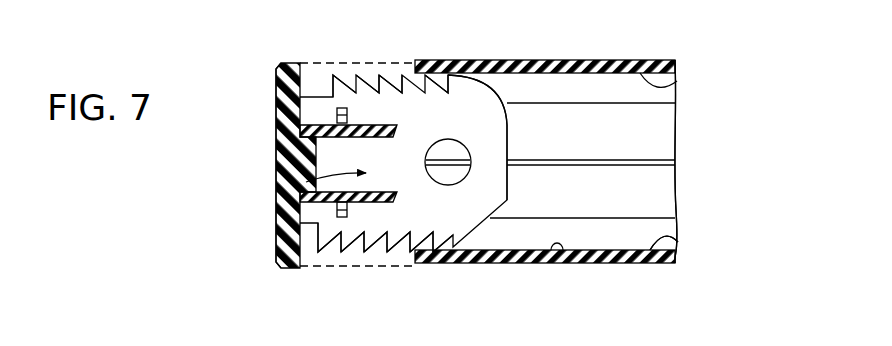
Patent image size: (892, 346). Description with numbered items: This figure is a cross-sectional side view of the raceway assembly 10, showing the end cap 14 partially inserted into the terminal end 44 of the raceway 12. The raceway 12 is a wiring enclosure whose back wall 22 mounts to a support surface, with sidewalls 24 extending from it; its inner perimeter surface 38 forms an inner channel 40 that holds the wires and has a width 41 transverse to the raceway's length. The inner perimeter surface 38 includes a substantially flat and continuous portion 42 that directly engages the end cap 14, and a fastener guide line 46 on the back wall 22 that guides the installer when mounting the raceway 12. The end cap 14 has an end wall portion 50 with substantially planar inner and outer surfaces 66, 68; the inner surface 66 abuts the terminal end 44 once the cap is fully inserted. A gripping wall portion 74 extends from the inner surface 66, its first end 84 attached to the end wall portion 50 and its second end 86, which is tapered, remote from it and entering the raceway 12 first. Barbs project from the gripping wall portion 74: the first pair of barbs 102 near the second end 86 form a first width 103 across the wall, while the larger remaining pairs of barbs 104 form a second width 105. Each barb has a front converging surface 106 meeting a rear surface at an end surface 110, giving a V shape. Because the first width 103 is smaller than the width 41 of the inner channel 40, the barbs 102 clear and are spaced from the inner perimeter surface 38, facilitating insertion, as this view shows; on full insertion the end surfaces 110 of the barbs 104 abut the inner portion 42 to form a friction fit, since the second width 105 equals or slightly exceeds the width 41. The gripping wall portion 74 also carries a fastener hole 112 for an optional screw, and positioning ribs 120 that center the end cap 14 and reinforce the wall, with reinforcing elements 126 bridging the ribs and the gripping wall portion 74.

The raceway assembly 10 is at (692, 42).
The raceway 12 is at (652, 282).
The end cap 14 is at (243, 88).
The back wall 22 is at (673, 106).
The sidewalls 24 is at (592, 60).
The inner perimeter surface 38 is at (668, 238).
The inner channel 40 is at (686, 192).
The width 41 is at (632, 128).
The flat and continuous portion 42 is at (678, 82).
The terminal end 44 is at (408, 266).
The fastener guide line 46 is at (680, 160).
The end wall portion 50 is at (288, 268).
The inner surface 66 is at (305, 60).
The outer surface 68 is at (282, 163).
The gripping wall portion 74 is at (509, 195).
The first end 84 is at (317, 263).
The second end 86 is at (508, 127).
The first pair of barbs 102 is at (453, 62).
The first width 103 is at (477, 122).
The remaining pairs of barbs 104 is at (395, 62).
The second width 105 is at (283, 196).
The front converging surface 106 is at (345, 62).
The end surface 110 is at (358, 62).
The fastener hole 112 is at (468, 178).
The positioning ribs 120 is at (298, 133).
The reinforcing elements 126 is at (349, 114).